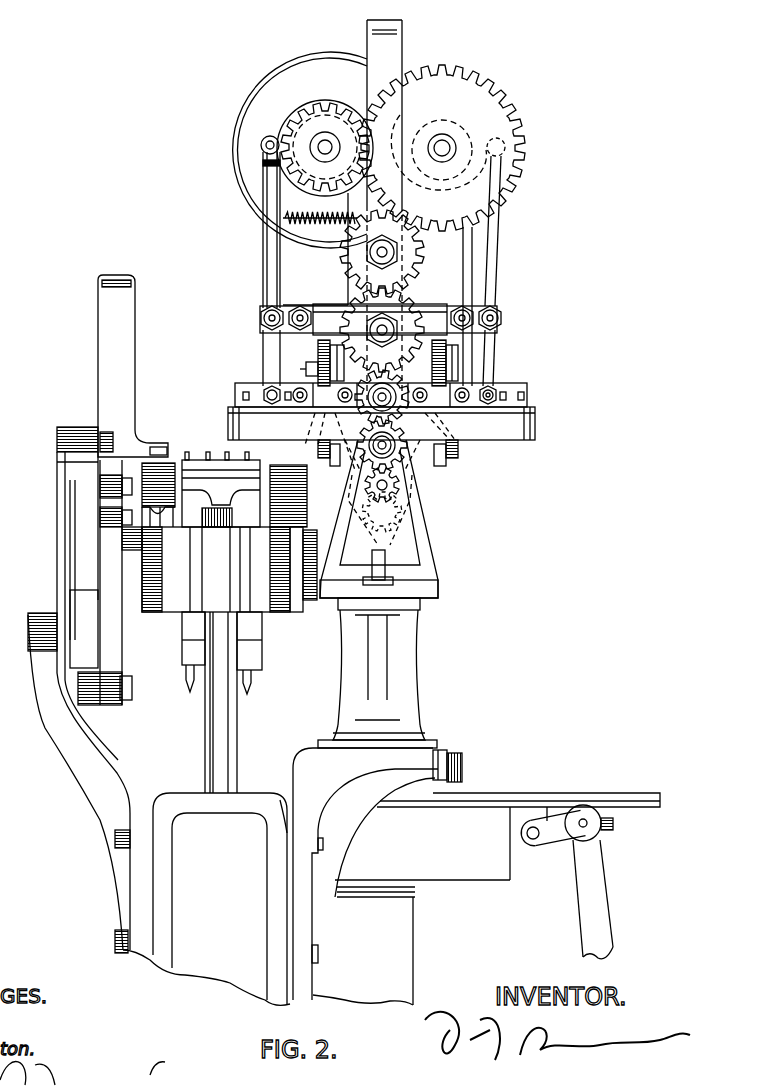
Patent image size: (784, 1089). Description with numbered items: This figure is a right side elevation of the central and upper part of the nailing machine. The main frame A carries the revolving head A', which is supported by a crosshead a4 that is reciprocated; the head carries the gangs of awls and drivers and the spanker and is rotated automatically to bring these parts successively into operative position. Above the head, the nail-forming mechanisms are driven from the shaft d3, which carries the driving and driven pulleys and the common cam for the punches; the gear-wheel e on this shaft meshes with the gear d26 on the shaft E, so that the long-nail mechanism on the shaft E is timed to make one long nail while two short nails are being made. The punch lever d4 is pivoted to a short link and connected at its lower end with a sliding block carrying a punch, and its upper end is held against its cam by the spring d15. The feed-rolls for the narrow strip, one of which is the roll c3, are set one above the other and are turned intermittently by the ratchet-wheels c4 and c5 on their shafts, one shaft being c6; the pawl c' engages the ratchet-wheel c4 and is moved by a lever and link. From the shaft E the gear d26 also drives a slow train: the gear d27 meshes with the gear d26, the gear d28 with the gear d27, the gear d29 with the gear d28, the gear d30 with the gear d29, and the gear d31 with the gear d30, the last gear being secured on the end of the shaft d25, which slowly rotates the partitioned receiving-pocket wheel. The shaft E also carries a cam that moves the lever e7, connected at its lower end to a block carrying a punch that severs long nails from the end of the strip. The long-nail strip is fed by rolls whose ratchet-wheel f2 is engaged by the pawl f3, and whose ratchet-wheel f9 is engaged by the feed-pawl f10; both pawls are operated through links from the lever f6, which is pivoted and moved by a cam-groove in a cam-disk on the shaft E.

The main frame A is at (202, 883).
The revolving head A' is at (219, 660).
The crosshead a4 is at (345, 480).
The pawl c' is at (313, 359).
The feed-roll c3 is at (308, 374).
The ratchet-wheel c4 is at (318, 360).
The ratchet-wheel c5 is at (323, 458).
The shaft c6 is at (336, 466).
The shaft d3 is at (310, 146).
The lever d4 is at (265, 275).
The spring d15 is at (320, 228).
The shaft d25 is at (377, 514).
The gear d26 is at (442, 148).
The gear d27 is at (414, 262).
The gear d28 is at (405, 304).
The gear d29 is at (353, 412).
The gear d30 is at (400, 462).
The gear d31 is at (397, 494).
The gear-wheel e is at (325, 148).
The lever e7 is at (496, 272).
The shaft E is at (452, 150).
The ratchet-wheel f2 is at (455, 373).
The pawl f3 is at (458, 351).
The lever f6 is at (474, 254).
The ratchet-wheel f9 is at (458, 448).
The feed-pawl f10 is at (452, 462).